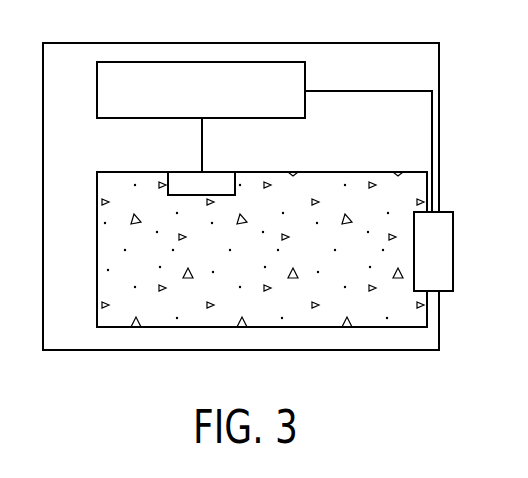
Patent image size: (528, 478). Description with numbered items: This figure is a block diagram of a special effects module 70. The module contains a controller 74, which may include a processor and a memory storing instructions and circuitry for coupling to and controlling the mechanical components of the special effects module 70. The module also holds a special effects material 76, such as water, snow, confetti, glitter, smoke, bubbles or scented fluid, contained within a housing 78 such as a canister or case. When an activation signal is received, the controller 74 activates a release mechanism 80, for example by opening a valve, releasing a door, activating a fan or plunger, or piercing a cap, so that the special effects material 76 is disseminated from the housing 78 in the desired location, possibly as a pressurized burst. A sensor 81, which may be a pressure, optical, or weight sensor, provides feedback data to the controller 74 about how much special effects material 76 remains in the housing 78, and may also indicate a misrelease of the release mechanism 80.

The special effects module 70 is at (242, 43).
The controller 74 is at (97, 90).
The special effects material 76 is at (135, 218).
The housing 78 is at (97, 248).
The release mechanism 80 is at (453, 250).
The sensor 81 is at (210, 182).